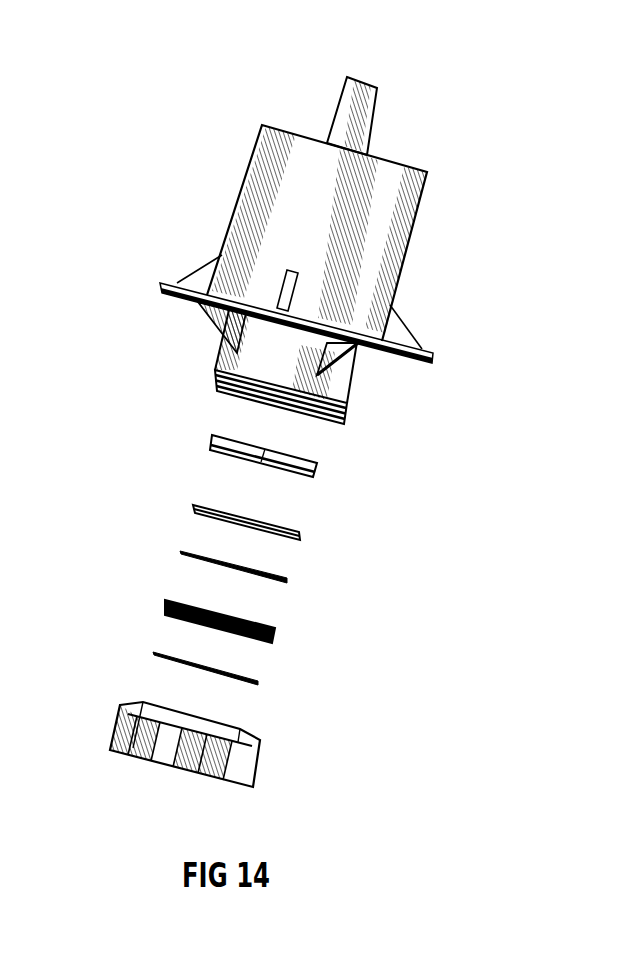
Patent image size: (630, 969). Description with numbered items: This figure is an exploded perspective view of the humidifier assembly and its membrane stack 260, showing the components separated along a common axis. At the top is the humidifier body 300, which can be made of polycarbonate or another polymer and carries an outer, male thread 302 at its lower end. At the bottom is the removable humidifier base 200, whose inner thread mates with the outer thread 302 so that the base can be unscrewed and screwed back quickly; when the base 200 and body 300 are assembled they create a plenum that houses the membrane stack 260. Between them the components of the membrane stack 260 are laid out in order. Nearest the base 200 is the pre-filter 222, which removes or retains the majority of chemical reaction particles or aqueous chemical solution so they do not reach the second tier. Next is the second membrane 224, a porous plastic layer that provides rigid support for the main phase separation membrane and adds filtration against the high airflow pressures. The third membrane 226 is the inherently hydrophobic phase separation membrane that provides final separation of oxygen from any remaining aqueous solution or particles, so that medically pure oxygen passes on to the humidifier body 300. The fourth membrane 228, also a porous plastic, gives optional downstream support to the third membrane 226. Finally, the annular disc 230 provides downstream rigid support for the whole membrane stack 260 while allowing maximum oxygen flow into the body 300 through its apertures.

The humidifier body 300 is at (398, 264).
The outer thread 302 is at (362, 405).
The membrane stack 260 is at (193, 475).
The annular disc 230 is at (340, 470).
The fourth membrane 228 is at (324, 538).
The third membrane 226 is at (309, 584).
The second membrane 224 is at (297, 640).
The pre-filter 222 is at (290, 689).
The humidifier base 200 is at (250, 757).